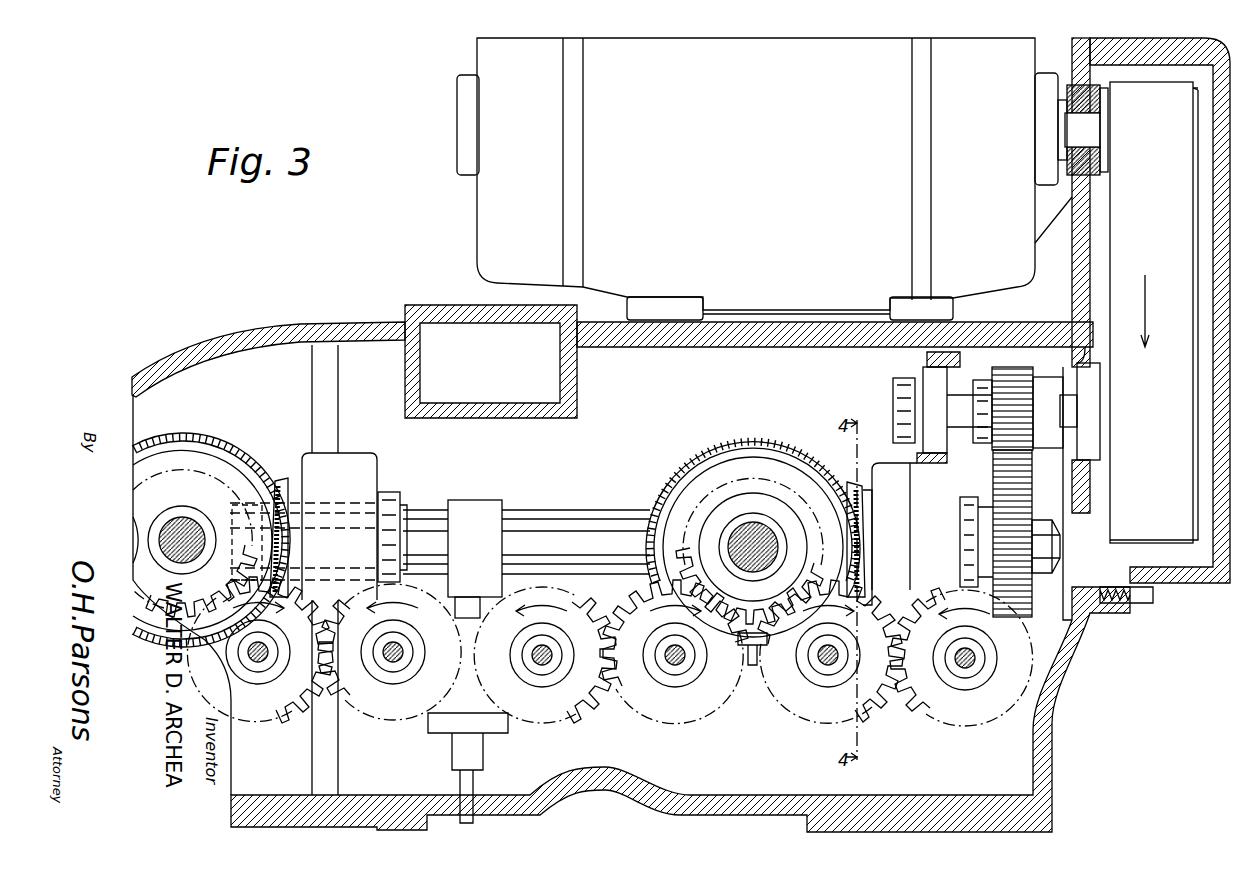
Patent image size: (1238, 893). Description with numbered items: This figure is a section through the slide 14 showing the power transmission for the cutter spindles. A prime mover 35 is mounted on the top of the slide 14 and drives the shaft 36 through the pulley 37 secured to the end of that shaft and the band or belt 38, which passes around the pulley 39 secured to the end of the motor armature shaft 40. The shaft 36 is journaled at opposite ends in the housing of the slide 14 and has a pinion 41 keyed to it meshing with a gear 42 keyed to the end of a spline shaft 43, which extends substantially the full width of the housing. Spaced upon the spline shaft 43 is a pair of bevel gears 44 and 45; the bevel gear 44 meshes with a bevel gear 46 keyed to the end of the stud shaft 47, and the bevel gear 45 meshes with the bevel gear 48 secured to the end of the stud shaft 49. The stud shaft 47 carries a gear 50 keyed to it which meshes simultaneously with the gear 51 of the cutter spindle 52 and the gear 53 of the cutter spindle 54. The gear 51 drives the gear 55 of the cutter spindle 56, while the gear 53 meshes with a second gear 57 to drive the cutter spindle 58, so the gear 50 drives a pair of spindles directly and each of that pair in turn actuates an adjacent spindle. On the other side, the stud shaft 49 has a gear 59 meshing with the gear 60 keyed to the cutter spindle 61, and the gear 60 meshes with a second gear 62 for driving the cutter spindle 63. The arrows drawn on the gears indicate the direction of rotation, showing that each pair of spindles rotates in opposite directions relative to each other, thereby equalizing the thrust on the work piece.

The slide 14 is at (212, 347).
The prime mover 35 is at (480, 229).
The shaft 36 is at (958, 395).
The pulley 37 is at (1197, 285).
The band or belt 38 is at (1072, 275).
The pulley 39 is at (1197, 92).
The motor armature shaft 40 is at (1098, 127).
The pinion 41 is at (1020, 366).
The gear 42 is at (1033, 477).
The spline shaft 43 is at (628, 500).
The bevel gear 44 is at (848, 482).
The bevel gear 45 is at (277, 480).
The bevel gear 46 is at (746, 442).
The stud shaft 47 is at (734, 524).
The bevel gear 48 is at (244, 468).
The stud shaft 49 is at (172, 548).
The gear 50 is at (690, 524).
The gear 51 is at (657, 722).
The cutter spindle 52 is at (673, 673).
The gear 53 is at (795, 713).
The cutter spindle 54 is at (818, 672).
The gear 55 is at (547, 722).
The cutter spindle 56 is at (540, 673).
The second gear 57 is at (946, 722).
The cutter spindle 58 is at (975, 667).
The gear 59 is at (203, 478).
The gear 60 is at (262, 721).
The cutter spindle 61 is at (266, 669).
The second gear 62 is at (379, 720).
The cutter spindle 63 is at (387, 671).